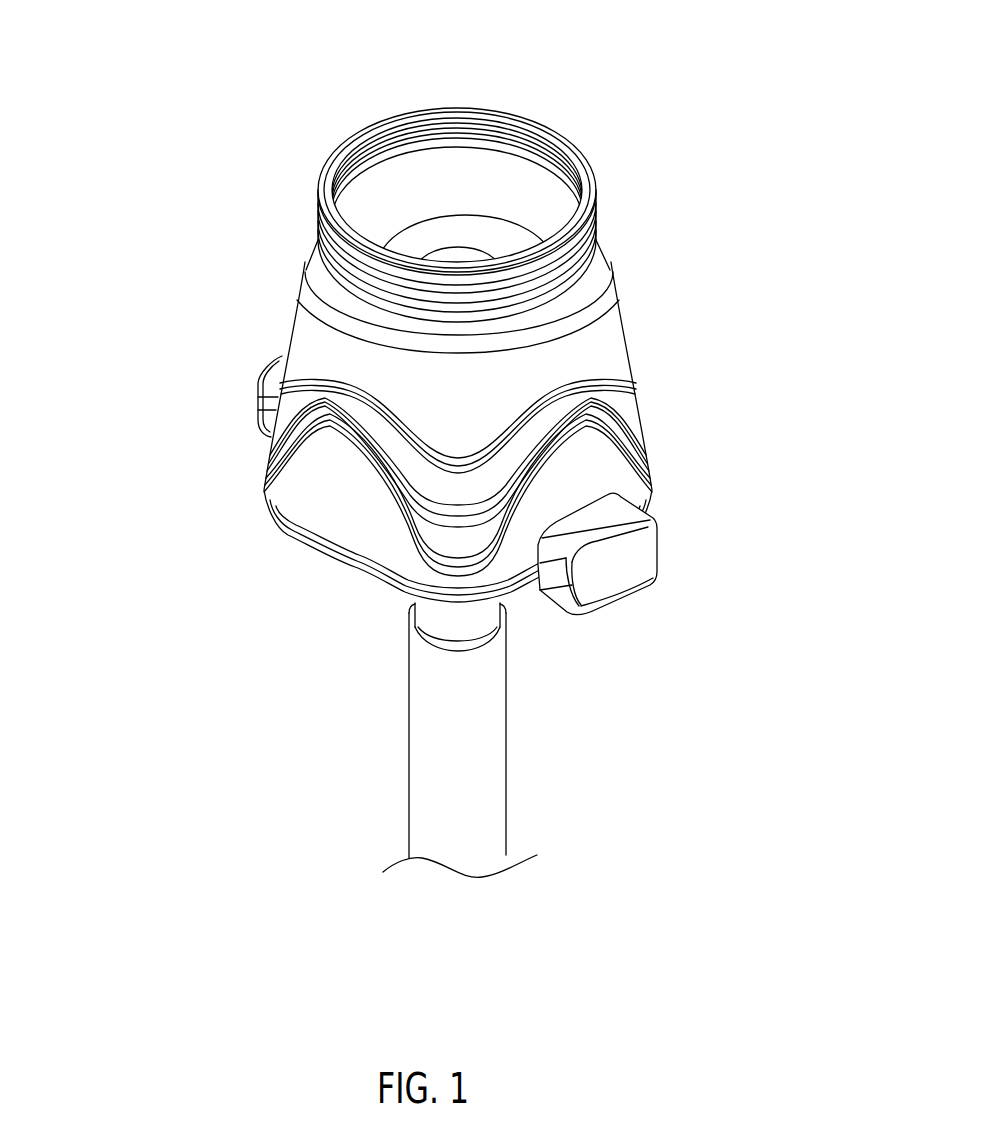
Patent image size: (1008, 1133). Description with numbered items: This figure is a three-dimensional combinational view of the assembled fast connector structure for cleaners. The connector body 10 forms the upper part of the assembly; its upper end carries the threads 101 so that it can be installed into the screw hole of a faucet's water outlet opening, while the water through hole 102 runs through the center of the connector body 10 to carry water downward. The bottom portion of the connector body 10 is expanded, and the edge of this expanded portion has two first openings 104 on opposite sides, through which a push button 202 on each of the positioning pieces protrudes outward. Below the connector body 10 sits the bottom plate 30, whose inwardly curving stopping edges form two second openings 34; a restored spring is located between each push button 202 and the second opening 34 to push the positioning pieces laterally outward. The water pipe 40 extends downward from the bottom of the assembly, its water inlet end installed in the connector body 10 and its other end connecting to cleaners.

The connector body 10 is at (648, 365).
The internal threads 101 is at (320, 226).
The water through hole 102 is at (497, 193).
The push button 202 is at (258, 398).
The bottom plate 30 is at (290, 553).
The first opening 104 is at (380, 625).
The second opening 34 is at (492, 552).
The water pipe 40 is at (520, 745).